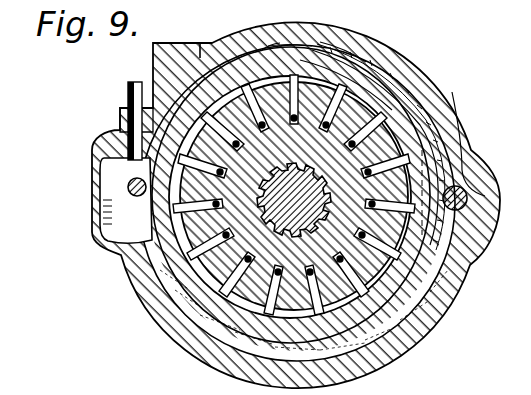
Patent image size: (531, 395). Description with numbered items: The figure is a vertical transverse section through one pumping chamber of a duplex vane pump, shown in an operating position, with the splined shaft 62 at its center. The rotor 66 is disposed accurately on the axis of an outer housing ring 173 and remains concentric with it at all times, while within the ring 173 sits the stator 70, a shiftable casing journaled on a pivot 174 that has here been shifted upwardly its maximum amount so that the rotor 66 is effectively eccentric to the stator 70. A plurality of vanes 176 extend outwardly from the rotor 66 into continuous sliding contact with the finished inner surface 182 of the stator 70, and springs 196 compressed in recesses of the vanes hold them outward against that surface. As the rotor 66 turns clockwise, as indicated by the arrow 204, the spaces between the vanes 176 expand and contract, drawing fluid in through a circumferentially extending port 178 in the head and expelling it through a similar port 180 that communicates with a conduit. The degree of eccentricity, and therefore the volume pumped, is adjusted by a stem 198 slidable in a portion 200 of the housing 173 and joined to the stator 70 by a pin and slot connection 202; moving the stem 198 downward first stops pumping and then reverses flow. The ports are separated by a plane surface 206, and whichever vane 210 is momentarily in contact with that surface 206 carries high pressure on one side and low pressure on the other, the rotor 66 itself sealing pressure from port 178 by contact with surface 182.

The splined shaft 62 is at (294, 200).
The rotor 66 is at (370, 86).
The stator 70 is at (445, 112).
The housing ring 173 is at (425, 98).
The pivot 174 is at (458, 190).
The vanes 176 is at (358, 286).
The port 178 is at (217, 110).
The port 180 is at (353, 55).
The surface 182 is at (422, 87).
The springs 196 is at (282, 42).
The stem 198 is at (133, 93).
The portion of housing 200 is at (121, 117).
The pin and slot connection 202 is at (127, 187).
The arrow 204 is at (240, 197).
The plane surface 206 is at (283, 42).
The vane 210 is at (328, 42).